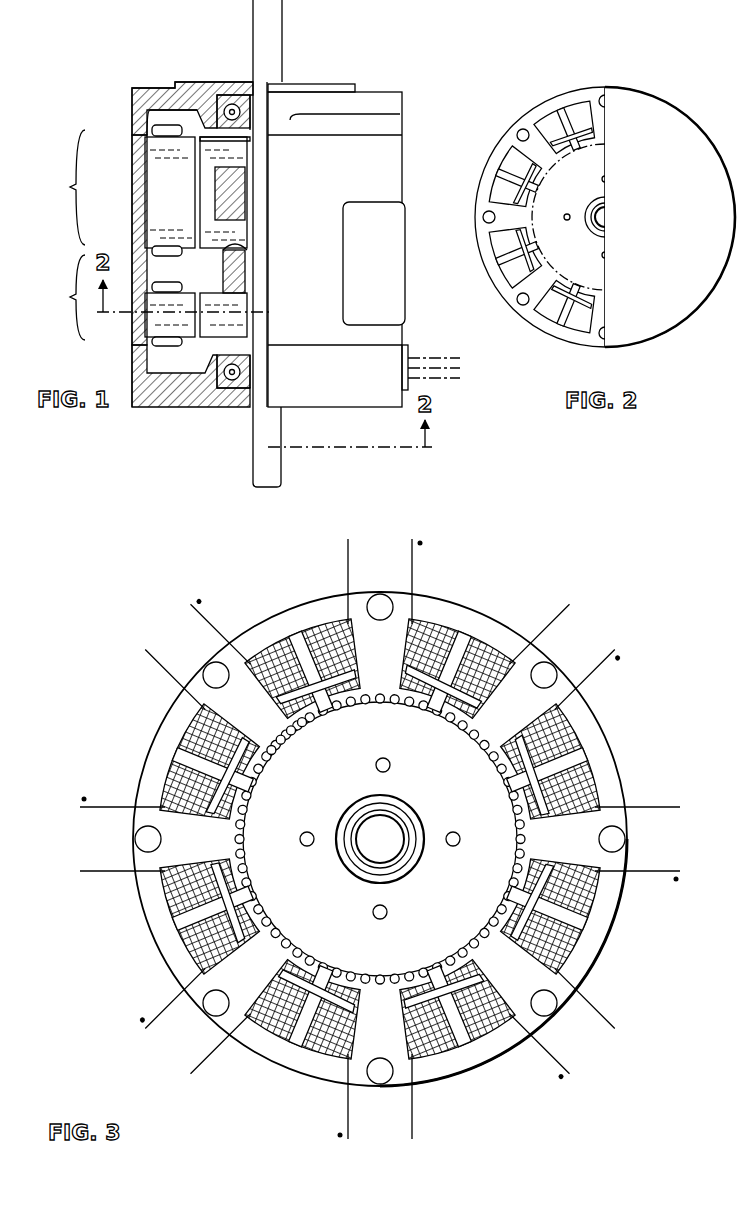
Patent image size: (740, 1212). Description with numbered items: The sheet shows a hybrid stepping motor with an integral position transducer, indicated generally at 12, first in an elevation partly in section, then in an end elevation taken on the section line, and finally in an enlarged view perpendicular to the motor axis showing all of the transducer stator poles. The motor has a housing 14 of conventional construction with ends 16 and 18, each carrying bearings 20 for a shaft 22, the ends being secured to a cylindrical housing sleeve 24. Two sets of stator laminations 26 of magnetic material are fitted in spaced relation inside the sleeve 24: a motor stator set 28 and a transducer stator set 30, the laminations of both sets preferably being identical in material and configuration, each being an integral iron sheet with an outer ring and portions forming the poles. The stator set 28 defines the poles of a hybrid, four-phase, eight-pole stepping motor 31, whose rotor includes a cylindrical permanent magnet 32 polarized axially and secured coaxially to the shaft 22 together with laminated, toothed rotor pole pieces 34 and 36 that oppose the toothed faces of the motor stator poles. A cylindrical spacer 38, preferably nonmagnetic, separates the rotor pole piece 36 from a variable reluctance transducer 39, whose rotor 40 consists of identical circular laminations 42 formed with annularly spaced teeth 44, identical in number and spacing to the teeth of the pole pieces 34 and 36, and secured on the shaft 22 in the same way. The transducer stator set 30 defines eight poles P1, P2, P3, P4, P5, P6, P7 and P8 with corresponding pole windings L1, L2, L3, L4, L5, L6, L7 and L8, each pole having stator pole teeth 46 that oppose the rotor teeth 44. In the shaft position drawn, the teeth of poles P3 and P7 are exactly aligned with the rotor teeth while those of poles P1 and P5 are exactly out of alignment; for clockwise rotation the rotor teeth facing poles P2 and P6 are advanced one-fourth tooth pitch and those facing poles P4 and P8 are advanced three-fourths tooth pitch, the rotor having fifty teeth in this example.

In FIG. 1, the hybrid stepping motor with integral position transducer 12 is at (148, 57).
In FIG. 2, the hybrid stepping motor with integral position transducer 12 is at (530, 97).
In FIG. 1, the housing 14 is at (403, 168).
In FIG. 1, the housing end 16 is at (192, 80).
In FIG. 1, the housing end 18 is at (160, 407).
In FIG. 2, the housing end 18 is at (660, 178).
In FIG. 1, the bearings 20 is at (232, 104).
In FIG. 1, the shaft 22 is at (275, 28).
In FIG. 2, the shaft 22 is at (610, 221).
In FIG. 3, the shaft 22 is at (390, 847).
In FIG. 1, the housing sleeve 24 is at (132, 158).
In FIG. 2, the stator laminations 26 is at (540, 318).
In FIG. 1, the motor stator set 28 is at (190, 127).
In FIG. 1, the transducer stator set 30 is at (187, 283).
In FIG. 1, the stepping motor 31 is at (143, 189).
In FIG. 1, the permanent magnet 32 is at (240, 197).
In FIG. 1, the rotor pole piece 34 is at (240, 138).
In FIG. 1, the rotor pole piece 36 is at (242, 256).
In FIG. 1, the cylindrical spacer 38 is at (237, 273).
In FIG. 1, the variable reluctance transducer 39 is at (143, 297).
In FIG. 1, the rotor 40 is at (250, 344).
In FIG. 2, the circular laminations 42 is at (556, 196).
In FIG. 3, the circular laminations 42 is at (433, 794).
In FIG. 3, the rotor teeth 44 is at (282, 740).
In FIG. 3, the stator pole teeth 46 is at (287, 733).
In FIG. 3, the pole winding L1 is at (437, 632).
In FIG. 3, the pole winding L2 is at (552, 732).
In FIG. 3, the pole winding L3 is at (585, 885).
In FIG. 3, the pole winding L4 is at (528, 1052).
In FIG. 3, the pole winding L5 is at (333, 1045).
In FIG. 3, the pole winding L6 is at (207, 947).
In FIG. 3, the pole winding L7 is at (180, 800).
In FIG. 3, the pole winding L8 is at (287, 657).
In FIG. 3, the transducer pole P1 is at (380, 620).
In FIG. 3, the transducer pole P2 is at (533, 688).
In FIG. 3, the transducer pole P3 is at (592, 839).
In FIG. 3, the transducer pole P4 is at (534, 989).
In FIG. 3, the transducer pole P5 is at (381, 1051).
In FIG. 3, the transducer pole P6 is at (228, 989).
In FIG. 3, the transducer pole P7 is at (166, 839).
In FIG. 3, the transducer pole P8 is at (229, 686).